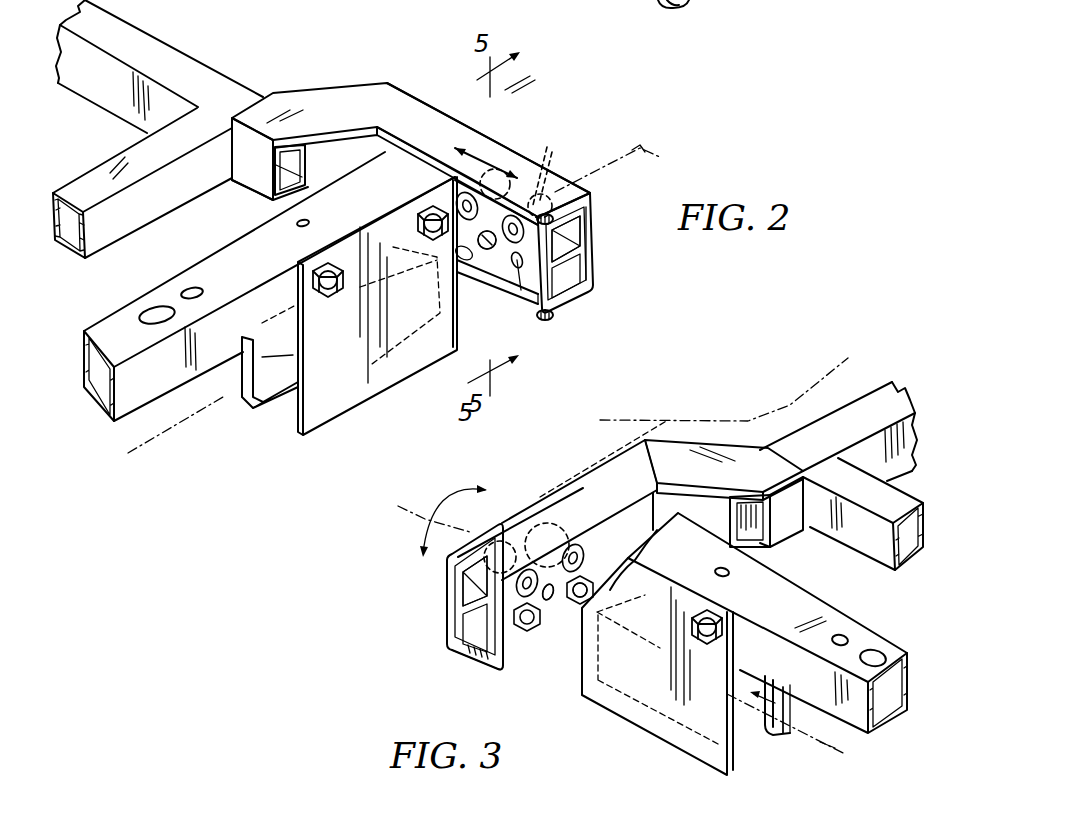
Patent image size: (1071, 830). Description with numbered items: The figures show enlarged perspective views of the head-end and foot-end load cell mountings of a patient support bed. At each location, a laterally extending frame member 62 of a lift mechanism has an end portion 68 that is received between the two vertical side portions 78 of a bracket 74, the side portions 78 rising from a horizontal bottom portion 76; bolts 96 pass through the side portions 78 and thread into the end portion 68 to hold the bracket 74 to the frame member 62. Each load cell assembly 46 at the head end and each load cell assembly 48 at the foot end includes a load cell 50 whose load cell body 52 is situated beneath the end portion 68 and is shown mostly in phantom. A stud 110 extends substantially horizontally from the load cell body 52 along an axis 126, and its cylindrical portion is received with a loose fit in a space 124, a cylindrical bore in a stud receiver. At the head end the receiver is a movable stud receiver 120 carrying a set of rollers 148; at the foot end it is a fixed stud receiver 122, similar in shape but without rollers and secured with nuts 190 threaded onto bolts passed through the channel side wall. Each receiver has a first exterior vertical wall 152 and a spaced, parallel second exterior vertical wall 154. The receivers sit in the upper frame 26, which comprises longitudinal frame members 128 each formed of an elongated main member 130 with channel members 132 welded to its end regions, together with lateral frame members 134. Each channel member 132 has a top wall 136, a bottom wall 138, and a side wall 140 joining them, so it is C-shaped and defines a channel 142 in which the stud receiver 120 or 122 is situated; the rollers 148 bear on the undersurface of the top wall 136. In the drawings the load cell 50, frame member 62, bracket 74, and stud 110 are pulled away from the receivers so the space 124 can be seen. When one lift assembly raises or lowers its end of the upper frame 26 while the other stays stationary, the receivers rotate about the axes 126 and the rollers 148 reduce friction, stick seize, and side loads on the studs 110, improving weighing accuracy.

In FIG. 2, the upper frame 26 is at (203, 49).
In FIG. 3, the upper frame 26 is at (855, 389).
In FIG. 2, the load cell assembly 46 is at (378, 416).
In FIG. 3, the load cell assembly 48 is at (557, 698).
In FIG. 2, the load cell 50 is at (257, 361).
In FIG. 3, the load cell 50 is at (835, 748).
In FIG. 2, the load cell body 52 is at (287, 380).
In FIG. 3, the load cell body 52 is at (740, 723).
In FIG. 2, the frame member 62 is at (210, 280).
In FIG. 3, the frame member 62 is at (868, 640).
In FIG. 2, the end portion 68 is at (367, 183).
In FIG. 3, the end portion 68 is at (753, 585).
In FIG. 2, the bracket 74 is at (410, 362).
In FIG. 3, the bracket 74 is at (632, 708).
In FIG. 2, the bottom portion 76 is at (267, 400).
In FIG. 3, the bottom portion 76 is at (769, 737).
In FIG. 2, the side portion 78 is at (293, 383).
In FIG. 3, the side portion 78 is at (650, 728).
In FIG. 2, the bolt 96 is at (337, 266).
In FIG. 3, the bolt 96 is at (727, 622).
In FIG. 2, the stud 110 is at (464, 275).
In FIG. 3, the stud 110 is at (549, 602).
In FIG. 2, the movable stud receiver 120 is at (522, 308).
In FIG. 3, the fixed stud receiver 122 is at (447, 616).
In FIG. 2, the space 124 is at (493, 267).
In FIG. 3, the space 124 is at (558, 614).
In FIG. 2, the axis 126 is at (636, 168).
In FIG. 3, the axis 126 is at (601, 460).
In FIG. 2, the longitudinal frame member 128 is at (117, 126).
In FIG. 3, the longitudinal frame member 128 is at (822, 420).
In FIG. 2, the main member 130 is at (108, 87).
In FIG. 3, the main member 130 is at (838, 427).
In FIG. 2, the channel member 132 is at (400, 117).
In FIG. 3, the channel member 132 is at (684, 462).
In FIG. 2, the lateral frame member 134 is at (152, 207).
In FIG. 3, the lateral frame member 134 is at (883, 557).
In FIG. 2, the top wall 136 is at (430, 130).
In FIG. 3, the top wall 136 is at (567, 490).
In FIG. 2, the bottom wall 138 is at (573, 297).
In FIG. 3, the bottom wall 138 is at (470, 670).
In FIG. 2, the side wall 140 is at (589, 231).
In FIG. 3, the side wall 140 is at (449, 576).
In FIG. 2, the channel 142 is at (580, 283).
In FIG. 3, the channel 142 is at (614, 530).
In FIG. 2, the roller 148 is at (515, 194).
In FIG. 3, the roller 148 is at (538, 577).
In FIG. 2, the first exterior vertical wall 152 is at (543, 303).
In FIG. 3, the first exterior vertical wall 152 is at (470, 660).
In FIG. 2, the second exterior vertical wall 154 is at (574, 261).
In FIG. 3, the second exterior vertical wall 154 is at (460, 598).
In FIG. 3, the nut 190 is at (452, 648).